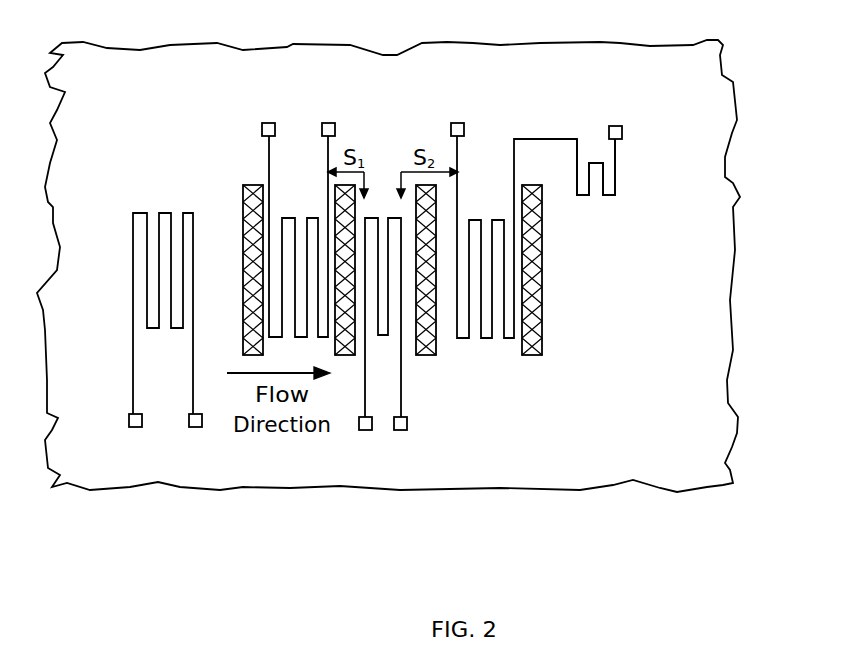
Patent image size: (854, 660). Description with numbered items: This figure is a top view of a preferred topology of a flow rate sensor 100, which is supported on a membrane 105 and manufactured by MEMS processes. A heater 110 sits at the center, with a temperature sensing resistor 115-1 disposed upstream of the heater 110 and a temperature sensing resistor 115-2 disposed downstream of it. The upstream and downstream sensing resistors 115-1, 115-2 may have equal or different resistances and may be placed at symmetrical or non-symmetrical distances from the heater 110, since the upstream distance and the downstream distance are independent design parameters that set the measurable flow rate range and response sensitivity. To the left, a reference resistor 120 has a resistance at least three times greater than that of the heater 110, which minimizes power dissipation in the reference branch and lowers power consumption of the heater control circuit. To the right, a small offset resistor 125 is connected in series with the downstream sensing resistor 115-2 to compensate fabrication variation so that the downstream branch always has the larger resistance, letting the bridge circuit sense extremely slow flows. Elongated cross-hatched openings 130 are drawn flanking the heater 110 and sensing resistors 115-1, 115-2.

The flow rate sensor 100 is at (742, 103).
The membrane 105 is at (459, 247).
The heater 110 is at (378, 338).
The upstream sensing resistor 115-1 is at (297, 198).
The downstream sensing resistor 115-2 is at (532, 197).
The reference resistor 120 is at (160, 210).
The offset resistor 125 is at (597, 193).
The opening 130 is at (542, 342).